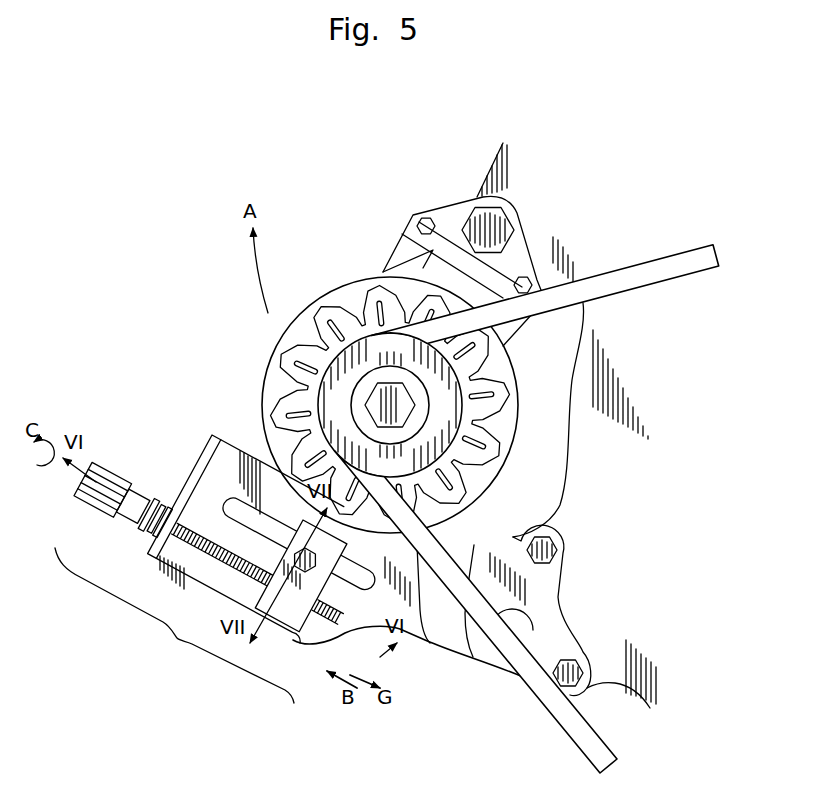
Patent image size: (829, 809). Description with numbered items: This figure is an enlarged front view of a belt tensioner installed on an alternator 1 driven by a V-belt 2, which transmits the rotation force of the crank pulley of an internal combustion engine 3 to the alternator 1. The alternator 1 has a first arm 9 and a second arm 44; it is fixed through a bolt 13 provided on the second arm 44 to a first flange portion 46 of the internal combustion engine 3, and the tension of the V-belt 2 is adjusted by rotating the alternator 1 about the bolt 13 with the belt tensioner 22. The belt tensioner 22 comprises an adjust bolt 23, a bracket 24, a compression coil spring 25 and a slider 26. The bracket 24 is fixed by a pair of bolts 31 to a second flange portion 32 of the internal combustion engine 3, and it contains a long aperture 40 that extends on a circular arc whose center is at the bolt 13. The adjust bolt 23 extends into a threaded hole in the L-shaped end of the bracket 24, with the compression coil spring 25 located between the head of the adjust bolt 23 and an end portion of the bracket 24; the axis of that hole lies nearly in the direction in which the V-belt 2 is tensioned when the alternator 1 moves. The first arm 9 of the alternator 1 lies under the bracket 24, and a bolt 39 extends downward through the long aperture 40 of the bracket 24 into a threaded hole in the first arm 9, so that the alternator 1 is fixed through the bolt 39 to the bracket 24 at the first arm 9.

The alternator 1 is at (325, 296).
The V-belt 2 is at (553, 713).
The internal combustion engine 3 is at (650, 692).
The first arm 9 is at (281, 476).
The bolt 13 is at (510, 224).
The belt tensioner 22 is at (174, 625).
The adjust bolt 23 is at (90, 500).
The bracket 24 is at (192, 577).
The compression coil spring 25 is at (141, 530).
The slider 26 is at (298, 638).
The bolts 31 is at (556, 546).
The second flange portion 32 is at (606, 688).
The bolt 39 is at (313, 572).
The long aperture 40 is at (235, 499).
The second arm 44 is at (432, 214).
The first flange portion 46 is at (491, 170).